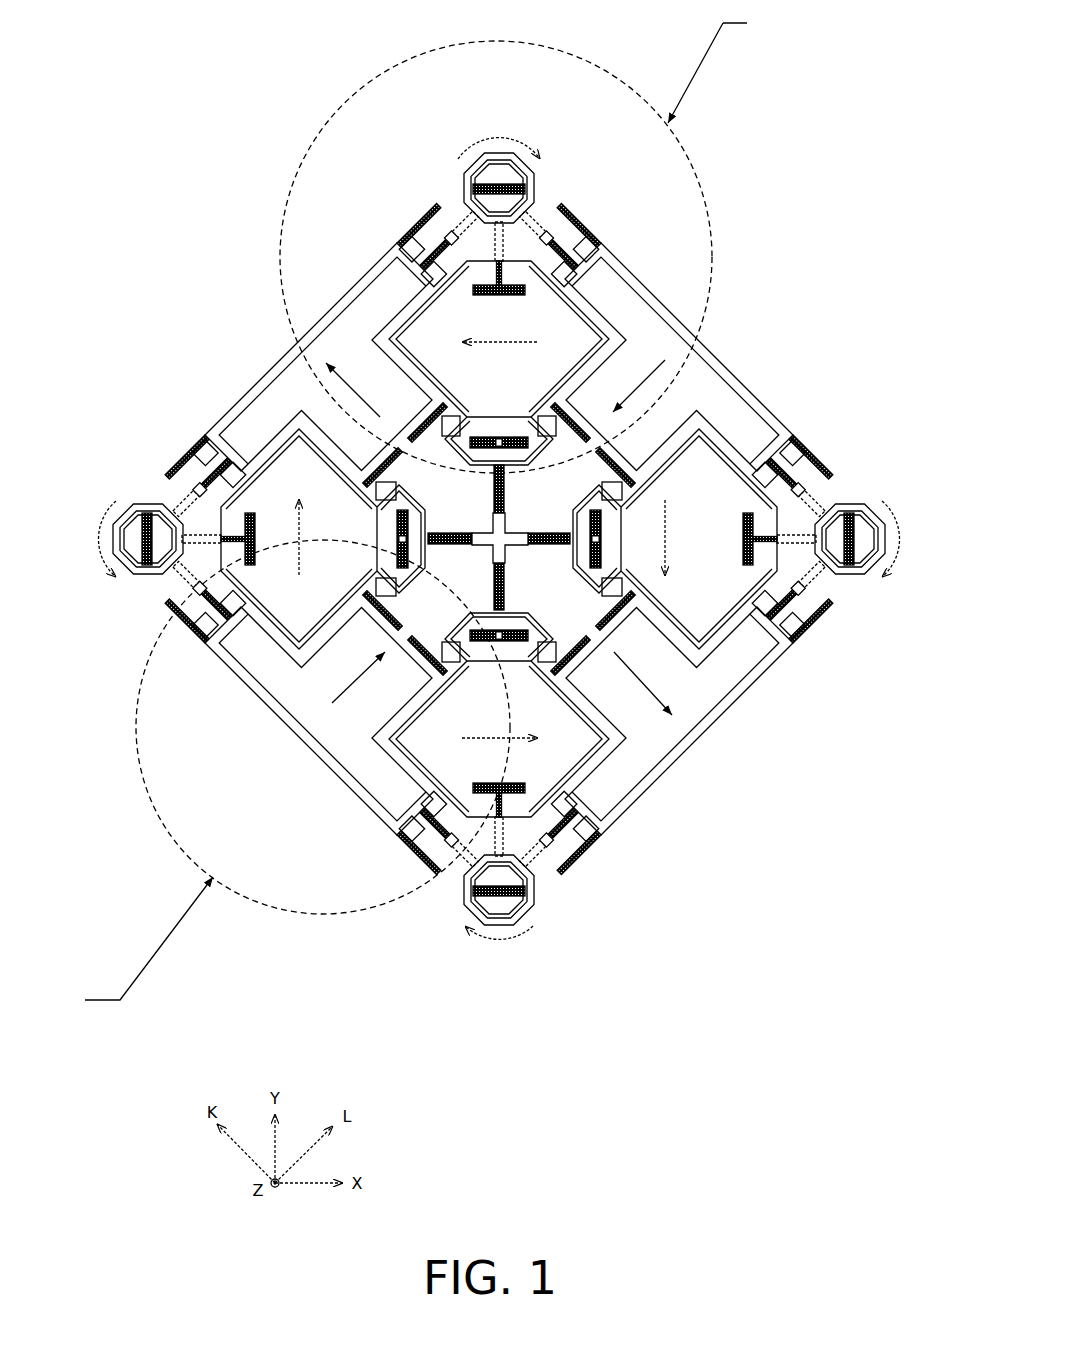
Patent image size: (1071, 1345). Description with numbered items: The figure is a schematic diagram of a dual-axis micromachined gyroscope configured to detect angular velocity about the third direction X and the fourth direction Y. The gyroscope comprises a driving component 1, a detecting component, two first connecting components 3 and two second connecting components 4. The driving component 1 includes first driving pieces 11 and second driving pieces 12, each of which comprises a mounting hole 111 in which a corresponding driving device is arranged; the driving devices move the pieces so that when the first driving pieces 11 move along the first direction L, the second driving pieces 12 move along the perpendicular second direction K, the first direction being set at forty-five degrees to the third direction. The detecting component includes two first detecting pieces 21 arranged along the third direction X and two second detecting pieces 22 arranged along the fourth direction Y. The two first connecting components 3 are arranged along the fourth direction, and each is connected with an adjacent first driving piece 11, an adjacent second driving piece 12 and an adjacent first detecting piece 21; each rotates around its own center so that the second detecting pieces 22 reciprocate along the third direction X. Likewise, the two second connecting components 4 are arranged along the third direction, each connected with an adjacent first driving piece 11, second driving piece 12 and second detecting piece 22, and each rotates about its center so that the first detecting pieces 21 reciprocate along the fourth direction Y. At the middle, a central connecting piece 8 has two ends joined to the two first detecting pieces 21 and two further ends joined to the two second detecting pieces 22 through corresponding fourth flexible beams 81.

The driving component 1 is at (500, 514).
The first driving piece 11 is at (713, 372).
The mounting hole 111 is at (280, 403).
The second driving piece 12 is at (332, 317).
The first detecting piece 21 is at (277, 582).
The second detecting piece 22 is at (455, 295).
The first connecting component 3 is at (480, 124).
The second connecting component 4 is at (98, 572).
The central connecting piece 8 is at (537, 568).
The fourth flexible beam 81 is at (450, 530).